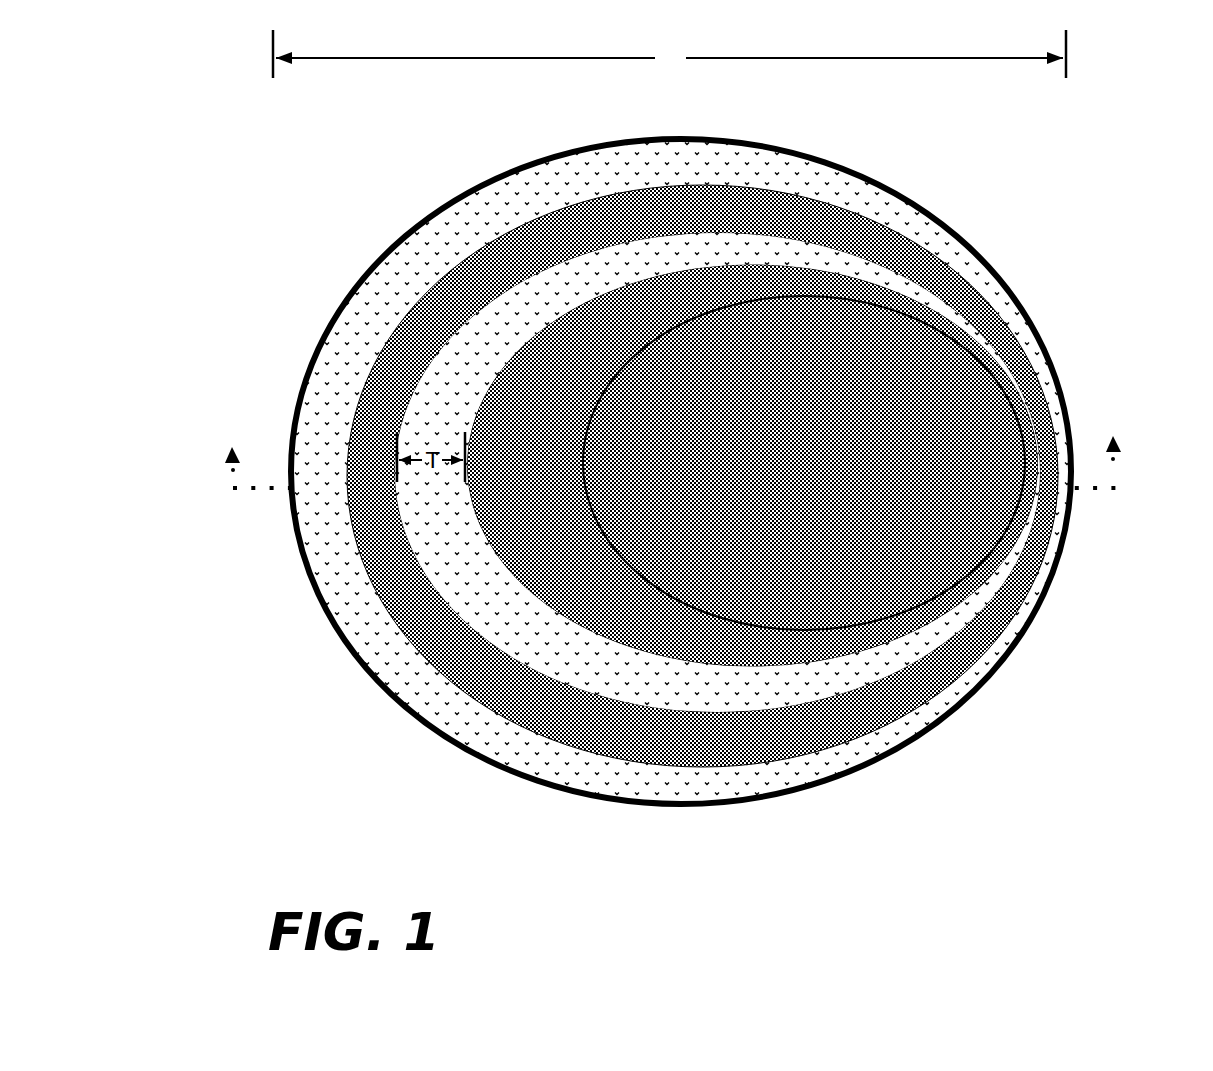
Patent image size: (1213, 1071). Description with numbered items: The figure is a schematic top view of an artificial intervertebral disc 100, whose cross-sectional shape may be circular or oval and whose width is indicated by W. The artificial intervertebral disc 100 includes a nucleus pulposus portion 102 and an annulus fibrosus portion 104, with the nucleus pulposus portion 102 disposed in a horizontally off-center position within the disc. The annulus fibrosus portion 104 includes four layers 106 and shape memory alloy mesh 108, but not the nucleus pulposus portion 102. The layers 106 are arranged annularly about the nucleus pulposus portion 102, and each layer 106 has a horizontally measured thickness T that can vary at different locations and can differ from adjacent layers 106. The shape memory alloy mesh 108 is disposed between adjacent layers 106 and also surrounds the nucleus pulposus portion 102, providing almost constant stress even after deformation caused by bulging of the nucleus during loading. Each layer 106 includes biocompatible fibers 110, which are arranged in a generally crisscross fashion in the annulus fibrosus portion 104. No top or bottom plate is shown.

The artificial intervertebral disc 100 is at (986, 152).
The nucleus pulposus portion 102 is at (978, 418).
The annulus fibrosus portion 104 is at (318, 326).
The layers 106 is at (558, 167).
The shape memory alloy mesh 108 is at (965, 353).
The biocompatible fibers 110 is at (525, 766).